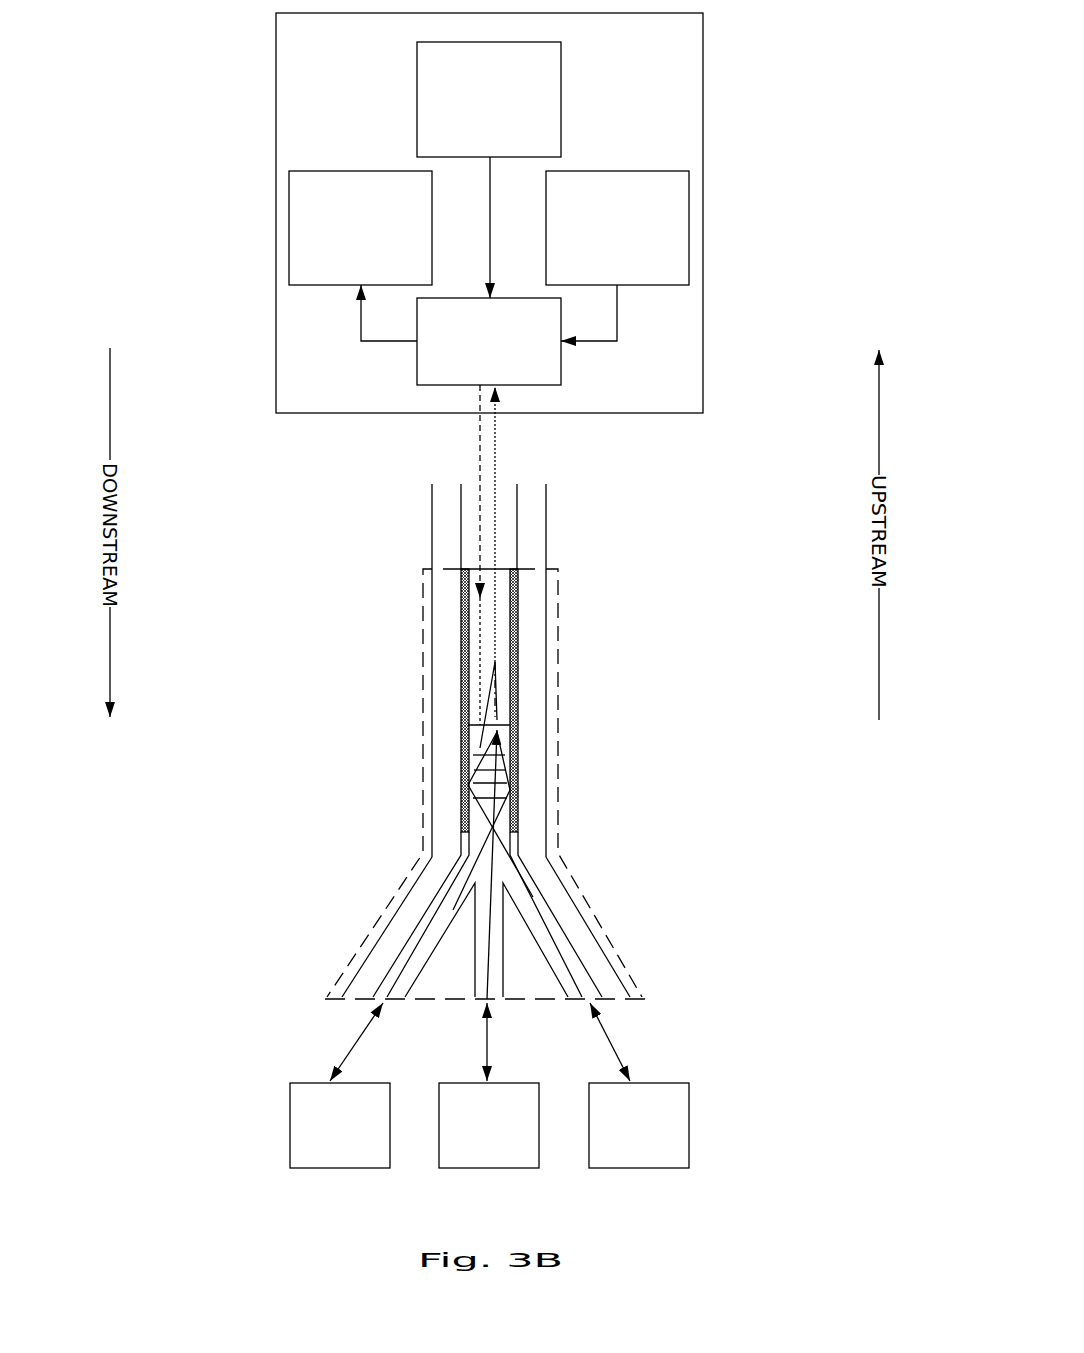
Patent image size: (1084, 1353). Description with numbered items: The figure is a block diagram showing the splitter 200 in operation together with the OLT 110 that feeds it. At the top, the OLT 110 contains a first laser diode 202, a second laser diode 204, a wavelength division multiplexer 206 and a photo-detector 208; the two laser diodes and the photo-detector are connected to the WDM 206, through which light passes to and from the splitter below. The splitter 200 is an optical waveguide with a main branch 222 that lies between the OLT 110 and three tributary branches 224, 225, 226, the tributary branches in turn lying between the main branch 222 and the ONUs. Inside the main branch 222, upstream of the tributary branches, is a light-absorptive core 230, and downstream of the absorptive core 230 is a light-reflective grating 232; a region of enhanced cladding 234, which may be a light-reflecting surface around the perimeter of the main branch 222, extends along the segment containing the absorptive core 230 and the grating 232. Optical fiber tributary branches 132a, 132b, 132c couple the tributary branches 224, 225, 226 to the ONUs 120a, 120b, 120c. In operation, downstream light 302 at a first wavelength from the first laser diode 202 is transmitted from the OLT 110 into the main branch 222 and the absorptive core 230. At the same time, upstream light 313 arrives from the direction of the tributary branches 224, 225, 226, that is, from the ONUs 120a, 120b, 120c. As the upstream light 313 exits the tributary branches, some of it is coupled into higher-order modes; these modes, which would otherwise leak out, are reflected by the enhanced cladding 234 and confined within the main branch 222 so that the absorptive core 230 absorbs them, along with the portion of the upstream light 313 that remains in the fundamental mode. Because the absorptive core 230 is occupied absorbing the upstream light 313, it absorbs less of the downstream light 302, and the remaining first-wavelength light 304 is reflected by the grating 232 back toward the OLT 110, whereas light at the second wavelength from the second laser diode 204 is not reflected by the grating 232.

The OLT 110 is at (353, 58).
The first laser diode 202 is at (506, 85).
The second laser diode 204 is at (633, 211).
The wavelength division multiplexer 206 is at (506, 338).
The photo-detector 208 is at (377, 211).
The light at a first wavelength 302 is at (478, 462).
The light from the first laser diode 304 is at (498, 477).
The splitter 200 is at (561, 618).
The main branch 222 is at (461, 700).
The absorptive core 230 is at (504, 676).
The upstream light 313 is at (505, 737).
The grating 232 is at (486, 778).
The enhanced cladding 234 is at (521, 802).
The tributary branch 225 is at (481, 897).
The tributary branch 226 is at (431, 905).
The tributary branch 224 is at (546, 895).
The optical fiber tributary branch 132a is at (612, 1034).
The optical fiber tributary branch 132b is at (491, 1045).
The optical fiber tributary branch 132c is at (356, 1047).
The ONU 120a is at (661, 1123).
The ONU 120b is at (511, 1123).
The ONU 120c is at (362, 1123).